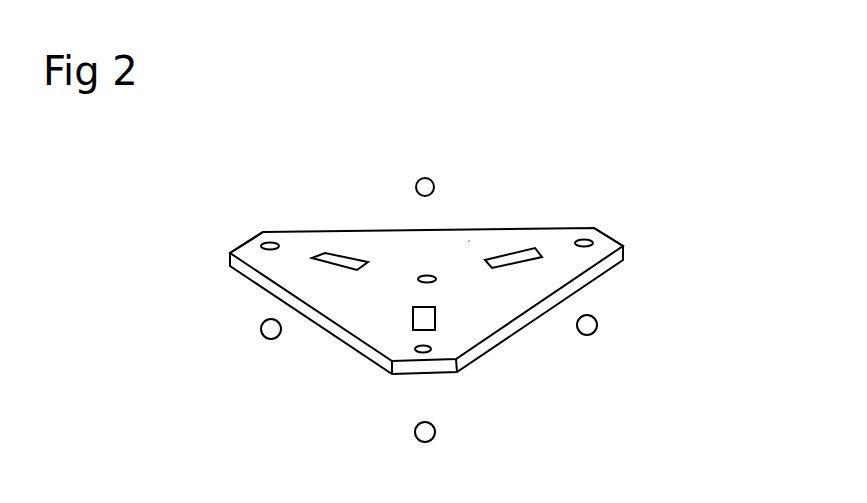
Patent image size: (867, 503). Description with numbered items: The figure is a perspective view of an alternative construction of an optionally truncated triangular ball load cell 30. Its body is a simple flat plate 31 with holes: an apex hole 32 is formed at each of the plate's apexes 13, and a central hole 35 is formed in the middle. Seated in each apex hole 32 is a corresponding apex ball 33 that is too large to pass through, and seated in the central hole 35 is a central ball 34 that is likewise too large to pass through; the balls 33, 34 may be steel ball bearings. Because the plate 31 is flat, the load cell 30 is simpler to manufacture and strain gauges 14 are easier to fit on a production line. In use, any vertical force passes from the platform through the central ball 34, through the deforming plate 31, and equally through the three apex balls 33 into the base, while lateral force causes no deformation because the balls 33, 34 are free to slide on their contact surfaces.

The triangular ball load cell 30 is at (632, 195).
The plate with holes 31 is at (468, 242).
The apexes 13 is at (237, 245).
The strain gauges 14 is at (337, 260).
The apex holes 32 is at (620, 244).
The apex balls 33 is at (263, 333).
The central ball 34 is at (432, 178).
The central hole 35 is at (434, 283).